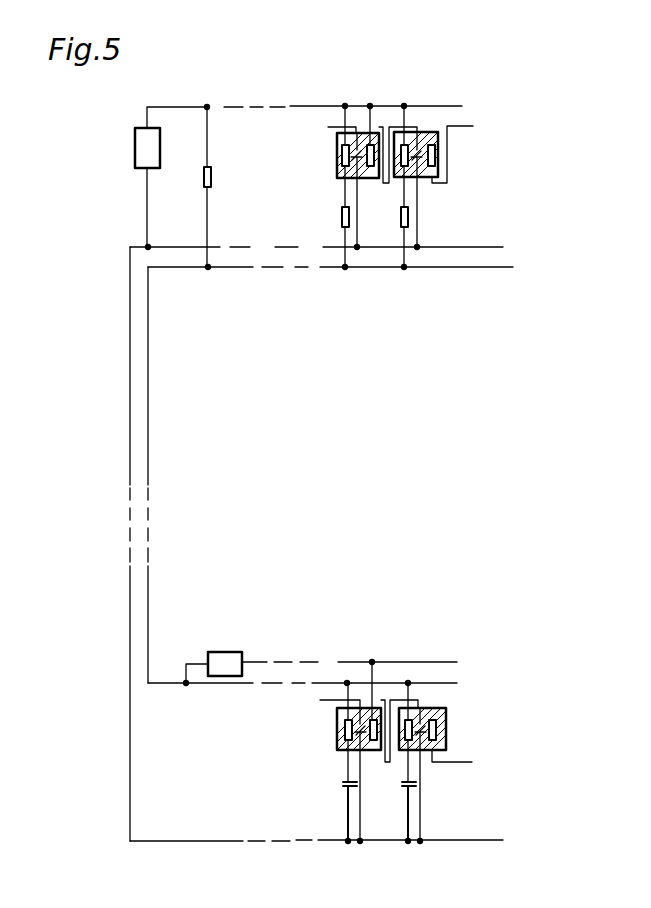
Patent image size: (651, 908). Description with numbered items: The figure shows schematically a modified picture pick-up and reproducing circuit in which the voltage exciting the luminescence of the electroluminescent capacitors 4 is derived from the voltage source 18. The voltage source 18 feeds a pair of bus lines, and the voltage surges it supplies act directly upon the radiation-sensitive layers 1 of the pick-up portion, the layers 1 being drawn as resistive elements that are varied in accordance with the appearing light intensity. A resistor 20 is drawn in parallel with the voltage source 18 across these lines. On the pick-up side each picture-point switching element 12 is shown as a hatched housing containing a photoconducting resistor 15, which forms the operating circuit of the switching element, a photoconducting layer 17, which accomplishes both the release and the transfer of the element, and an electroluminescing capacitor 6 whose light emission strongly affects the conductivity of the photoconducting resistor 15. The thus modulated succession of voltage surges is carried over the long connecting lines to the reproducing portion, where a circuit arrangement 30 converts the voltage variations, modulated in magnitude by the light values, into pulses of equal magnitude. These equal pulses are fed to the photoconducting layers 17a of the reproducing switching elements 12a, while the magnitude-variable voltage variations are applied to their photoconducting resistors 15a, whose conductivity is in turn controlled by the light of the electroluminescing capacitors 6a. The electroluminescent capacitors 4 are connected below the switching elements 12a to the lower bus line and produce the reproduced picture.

The voltage source 18 is at (145, 143).
The resistor 20 is at (204, 178).
The picture-point switching element 12 is at (343, 167).
The photoconducting resistor 15 is at (342, 135).
The electroluminescing capacitor 6 is at (358, 155).
The photoconducting layer 17 is at (378, 140).
The radiation-sensitive layer 1 is at (404, 225).
The circuit arrangement 30 is at (225, 655).
The photoconducting layer 17a is at (375, 710).
The photoconducting resistor 15a is at (338, 722).
The picture-point switching element 12a is at (340, 743).
The electroluminescing capacitor 6a is at (347, 750).
The electroluminescent capacitor 4 is at (403, 788).